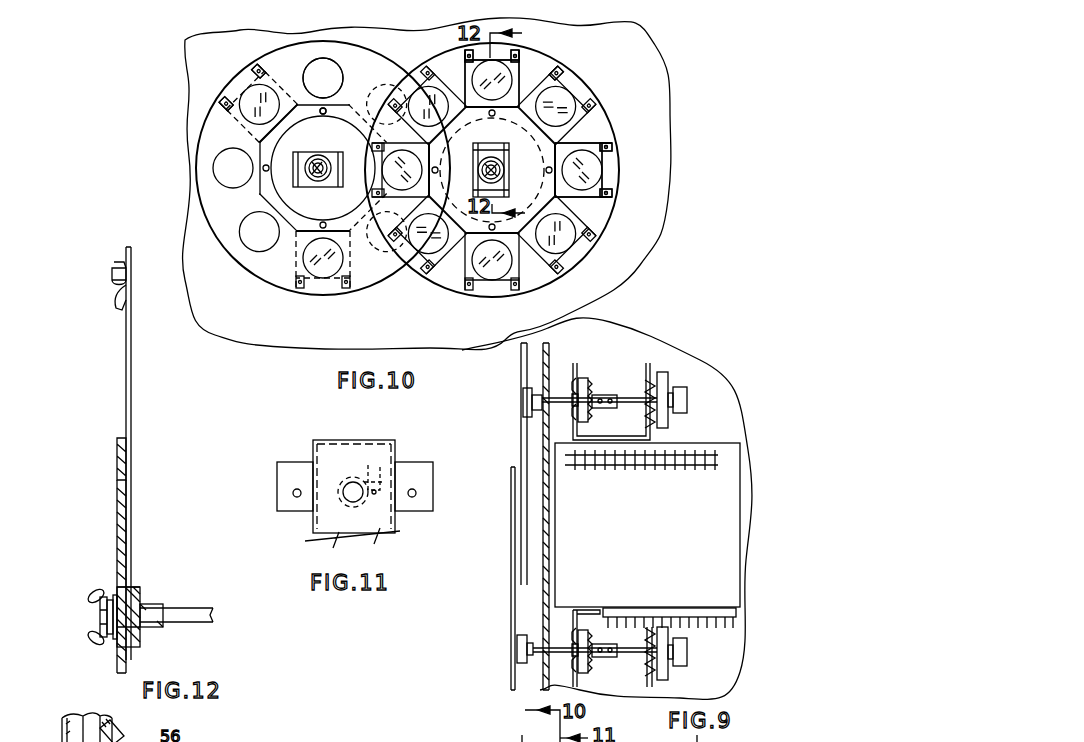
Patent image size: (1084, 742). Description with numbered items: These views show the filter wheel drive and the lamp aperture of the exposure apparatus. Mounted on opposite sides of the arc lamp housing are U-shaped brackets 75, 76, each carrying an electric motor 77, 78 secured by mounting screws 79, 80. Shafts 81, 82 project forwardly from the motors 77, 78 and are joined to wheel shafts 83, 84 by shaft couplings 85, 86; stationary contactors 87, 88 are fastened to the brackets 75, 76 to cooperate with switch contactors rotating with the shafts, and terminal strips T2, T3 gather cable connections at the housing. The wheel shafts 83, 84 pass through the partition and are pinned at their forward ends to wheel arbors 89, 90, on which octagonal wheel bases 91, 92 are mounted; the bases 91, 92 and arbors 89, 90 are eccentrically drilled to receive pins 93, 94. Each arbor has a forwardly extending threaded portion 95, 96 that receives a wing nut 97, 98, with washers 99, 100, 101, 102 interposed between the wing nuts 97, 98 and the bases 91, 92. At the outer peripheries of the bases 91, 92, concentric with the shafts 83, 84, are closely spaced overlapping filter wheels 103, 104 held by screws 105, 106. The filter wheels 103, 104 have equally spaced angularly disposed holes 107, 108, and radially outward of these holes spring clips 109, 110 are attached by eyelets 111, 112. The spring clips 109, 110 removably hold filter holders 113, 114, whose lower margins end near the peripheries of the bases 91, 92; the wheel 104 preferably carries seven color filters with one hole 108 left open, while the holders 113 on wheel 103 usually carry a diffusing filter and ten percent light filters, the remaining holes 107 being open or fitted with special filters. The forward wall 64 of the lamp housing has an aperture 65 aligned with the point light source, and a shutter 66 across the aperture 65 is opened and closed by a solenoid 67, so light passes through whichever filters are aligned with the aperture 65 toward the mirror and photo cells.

In FIG. 11, the forward wall 64 is at (398, 533).
In FIG. 11, the aperture 65 is at (345, 500).
In FIG. 11, the shutter 66 is at (355, 478).
In FIG. 11, the solenoid 67 is at (378, 468).
In FIG. 9, the U-shaped bracket 75 is at (651, 437).
In FIG. 9, the U-shaped bracket 76 is at (577, 640).
In FIG. 9, the electric motor 77 is at (668, 395).
In FIG. 9, the electric motor 78 is at (672, 655).
In FIG. 9, the mounting screw 79 is at (654, 410).
In FIG. 9, the mounting screw 80 is at (654, 640).
In FIG. 9, the motor shaft 81 is at (610, 407).
In FIG. 9, the motor shaft 82 is at (612, 658).
In FIG. 9, the wheel shaft 83 is at (557, 393).
In FIG. 9, the wheel shaft 84 is at (540, 655).
In FIG. 9, the shaft coupling 85 is at (645, 392).
In FIG. 9, the shaft coupling 86 is at (590, 666).
In FIG. 9, the stationary contactor 87 is at (583, 378).
In FIG. 9, the stationary contactor 88 is at (578, 640).
In FIG. 9, the wheel arbor 89 is at (524, 400).
In FIG. 12, the wheel arbor 90 is at (140, 641).
In FIG. 9, the wheel arbor 90 is at (520, 652).
In FIG. 10, the octagonal wheel base 91 is at (245, 210).
In FIG. 12, the octagonal wheel base 92 is at (128, 525).
In FIG. 10, the pin 93 is at (314, 161).
In FIG. 12, the pin 94 is at (130, 595).
In FIG. 10, the threaded portion 95 is at (313, 176).
In FIG. 12, the threaded portion 96 is at (103, 620).
In FIG. 10, the wing nut 97 is at (323, 177).
In FIG. 12, the wing nut 98 is at (104, 602).
In FIG. 10, the washer 99 is at (318, 156).
In FIG. 10, the washer 100 is at (324, 168).
In FIG. 12, the washer 101 is at (118, 590).
In FIG. 12, the washer 102 is at (112, 605).
In FIG. 10, the filter wheel 103 is at (288, 68).
In FIG. 10, the filter wheel 104 is at (532, 62).
In FIG. 12, the filter wheel 104 is at (132, 385).
In FIG. 10, the screw 105 is at (321, 110).
In FIG. 10, the screw 106 is at (580, 137).
In FIG. 12, the screw 106 is at (131, 458).
In FIG. 10, the hole 107 is at (230, 167).
In FIG. 10, the hole 108 is at (590, 92).
In FIG. 10, the spring clip 109 is at (226, 100).
In FIG. 12, the spring clip 110 is at (116, 298).
In FIG. 10, the eyelet 111 is at (255, 70).
In FIG. 12, the eyelet 112 is at (133, 270).
In FIG. 10, the filter holder 113 is at (222, 118).
In FIG. 10, the filter holder 114 is at (540, 38).
In FIG. 9, the terminal strip T2 is at (695, 466).
In FIG. 9, the terminal strip T3 is at (720, 610).